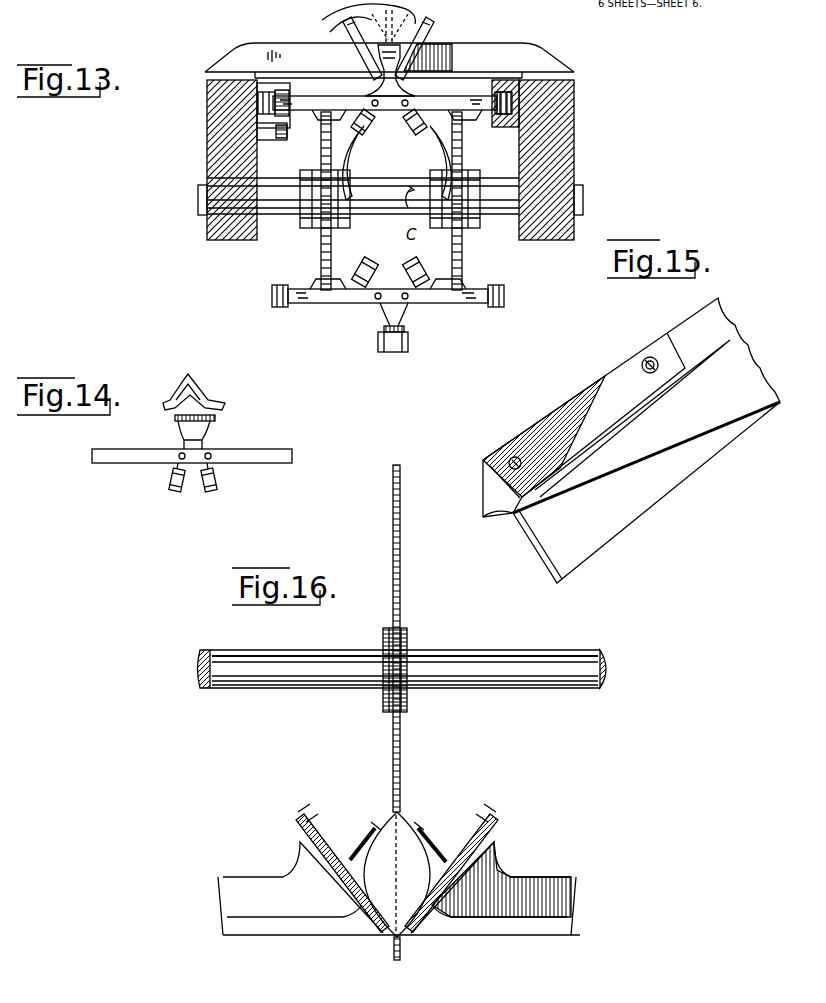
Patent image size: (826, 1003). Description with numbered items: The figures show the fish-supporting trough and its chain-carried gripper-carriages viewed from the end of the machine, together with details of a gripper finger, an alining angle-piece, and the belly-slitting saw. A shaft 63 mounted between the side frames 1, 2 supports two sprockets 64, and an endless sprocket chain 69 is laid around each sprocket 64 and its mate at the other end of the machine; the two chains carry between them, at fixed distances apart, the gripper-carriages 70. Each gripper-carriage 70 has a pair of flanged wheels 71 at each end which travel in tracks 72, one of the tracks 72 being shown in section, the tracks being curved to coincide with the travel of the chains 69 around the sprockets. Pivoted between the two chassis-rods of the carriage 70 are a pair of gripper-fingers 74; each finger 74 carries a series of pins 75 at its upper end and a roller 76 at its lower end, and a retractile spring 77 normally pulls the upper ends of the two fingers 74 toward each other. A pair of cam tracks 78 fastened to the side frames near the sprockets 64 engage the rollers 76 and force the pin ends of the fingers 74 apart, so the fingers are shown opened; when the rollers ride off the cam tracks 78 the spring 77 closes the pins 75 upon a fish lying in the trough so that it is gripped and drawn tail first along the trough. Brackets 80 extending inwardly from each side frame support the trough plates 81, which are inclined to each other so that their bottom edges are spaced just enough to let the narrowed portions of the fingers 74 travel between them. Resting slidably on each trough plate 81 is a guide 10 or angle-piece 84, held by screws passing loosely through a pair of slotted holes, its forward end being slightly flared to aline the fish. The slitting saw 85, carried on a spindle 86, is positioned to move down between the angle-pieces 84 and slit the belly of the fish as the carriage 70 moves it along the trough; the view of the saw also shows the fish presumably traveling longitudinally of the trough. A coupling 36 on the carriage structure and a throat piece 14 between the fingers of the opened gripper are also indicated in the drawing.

In FIG. 13, the side frame 1 is at (574, 152).
In FIG. 13, the side frame 2 is at (207, 150).
In FIG. 14, the guide 10 is at (276, 458).
In FIG. 14, the nozzle throat 14 is at (206, 436).
In FIG. 13, the coupling 36 is at (470, 122).
In FIG. 13, the shaft 63 is at (369, 208).
In FIG. 13, the sprocket 64 is at (302, 222).
In FIG. 13, the endless sprocket chain 69 is at (321, 250).
In FIG. 13, the gripper carriage 70 is at (322, 104).
In FIG. 13, the flanged wheel 71 is at (276, 297).
In FIG. 13, the track 72 is at (262, 92).
In FIG. 13, the gripper-finger 74 is at (384, 318).
In FIG. 13, the pin 75 is at (393, 352).
In FIG. 14, the pin 75 is at (187, 375).
In FIG. 13, the roller 76 is at (370, 263).
In FIG. 14, the roller 76 is at (211, 492).
In FIG. 13, the retractile spring 77 is at (402, 330).
In FIG. 14, the retractile spring 77 is at (218, 412).
In FIG. 13, the cam track 78 is at (362, 158).
In FIG. 13, the bracket 80 is at (300, 48).
In FIG. 16, the bracket 80 is at (272, 878).
In FIG. 13, the trough plate 81 is at (348, 26).
In FIG. 15, the trough plate 81 is at (645, 509).
In FIG. 16, the trough plate 81 is at (372, 926).
In FIG. 13, the angle-piece 84 is at (332, 16).
In FIG. 15, the angle-piece 84 is at (606, 379).
In FIG. 16, the angle-piece 84 is at (374, 833).
In FIG. 16, the slitting saw 85 is at (401, 753).
In FIG. 16, the spindle 86 is at (556, 652).